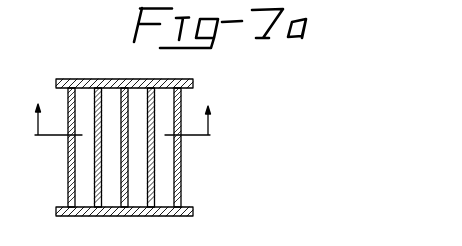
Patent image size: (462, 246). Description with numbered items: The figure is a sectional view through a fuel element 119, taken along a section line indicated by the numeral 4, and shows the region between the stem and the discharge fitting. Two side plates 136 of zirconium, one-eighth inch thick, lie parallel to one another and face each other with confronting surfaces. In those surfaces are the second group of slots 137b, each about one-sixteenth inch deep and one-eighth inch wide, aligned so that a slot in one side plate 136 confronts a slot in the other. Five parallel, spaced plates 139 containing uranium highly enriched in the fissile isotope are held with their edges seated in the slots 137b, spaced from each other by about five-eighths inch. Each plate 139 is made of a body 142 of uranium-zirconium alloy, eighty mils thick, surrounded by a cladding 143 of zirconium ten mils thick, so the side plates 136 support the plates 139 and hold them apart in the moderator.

The fuel element 119 is at (188, 103).
The side plate 136 is at (193, 84).
The second group of slots 137b is at (124, 80).
The plate containing uranium highly enriched in the U-235 isotope 139 is at (181, 186).
The body 142 is at (178, 158).
The cladding 143 is at (68, 161).
The section line 4- 4 is at (119, 120).